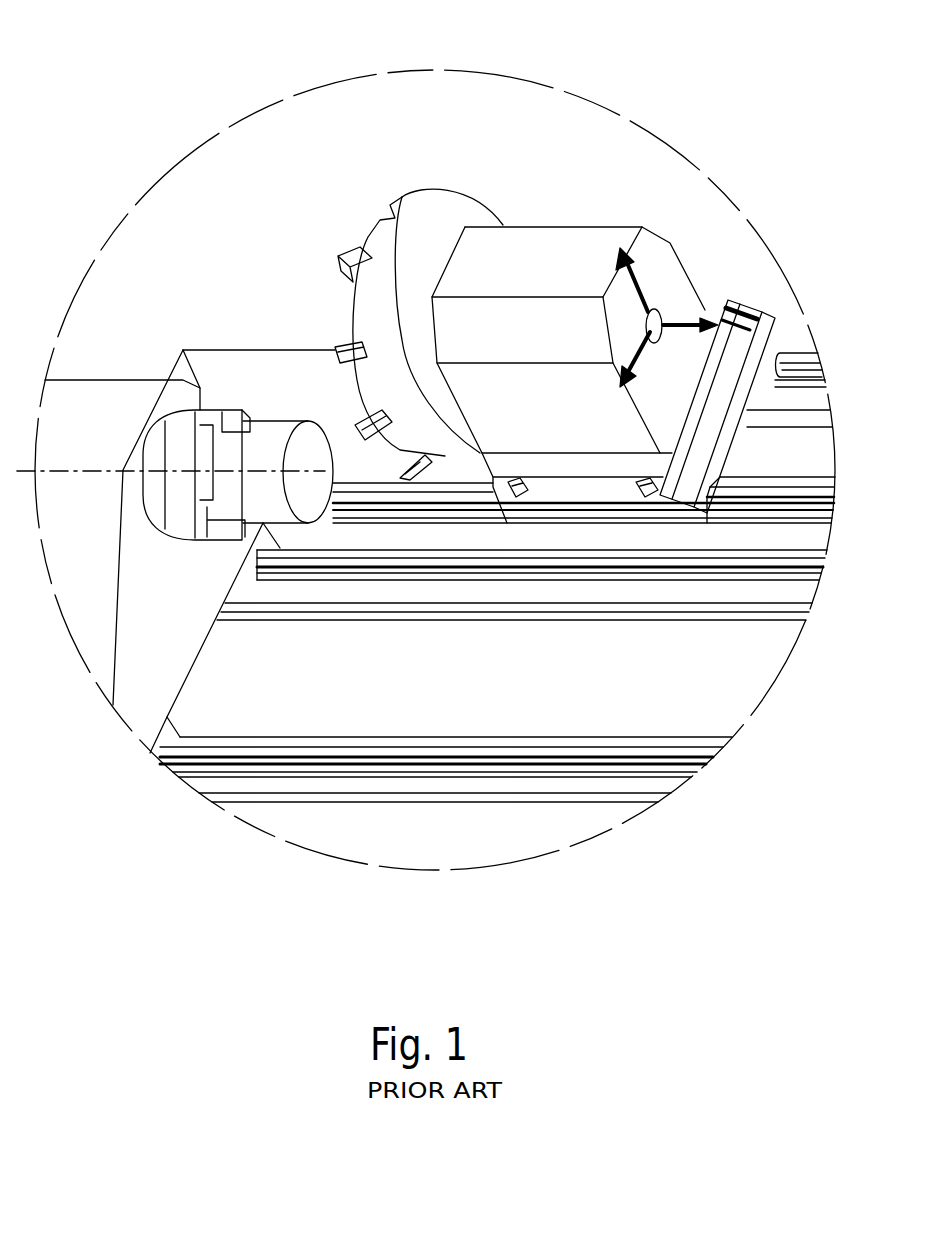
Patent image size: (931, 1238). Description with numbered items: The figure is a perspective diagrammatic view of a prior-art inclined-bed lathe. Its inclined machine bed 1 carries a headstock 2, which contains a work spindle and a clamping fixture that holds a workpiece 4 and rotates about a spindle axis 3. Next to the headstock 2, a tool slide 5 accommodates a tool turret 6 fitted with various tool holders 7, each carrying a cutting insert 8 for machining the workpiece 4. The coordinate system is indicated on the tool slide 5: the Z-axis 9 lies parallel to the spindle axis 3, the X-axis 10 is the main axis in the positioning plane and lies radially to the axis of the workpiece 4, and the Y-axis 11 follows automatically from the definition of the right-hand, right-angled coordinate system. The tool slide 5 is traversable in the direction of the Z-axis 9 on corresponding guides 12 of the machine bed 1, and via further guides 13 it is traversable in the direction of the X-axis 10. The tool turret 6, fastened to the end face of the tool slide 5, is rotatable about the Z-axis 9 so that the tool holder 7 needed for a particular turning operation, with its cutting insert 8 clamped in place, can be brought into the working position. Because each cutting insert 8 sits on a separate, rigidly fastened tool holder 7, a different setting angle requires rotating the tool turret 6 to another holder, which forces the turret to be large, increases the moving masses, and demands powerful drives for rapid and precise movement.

The machine bed 1 is at (452, 682).
The headstock 2 is at (83, 427).
The spindle axis 3 is at (235, 472).
The workpiece 4 is at (283, 440).
The tool slide 5 is at (532, 258).
The tool turret 6 is at (453, 222).
The tool holder 7 is at (358, 264).
The cutting insert 8 is at (345, 258).
The Z-axis 9 is at (703, 315).
The X-axis 10 is at (642, 360).
The Y-axis 11 is at (647, 318).
The guides 12 is at (737, 498).
The guides 13 is at (511, 495).